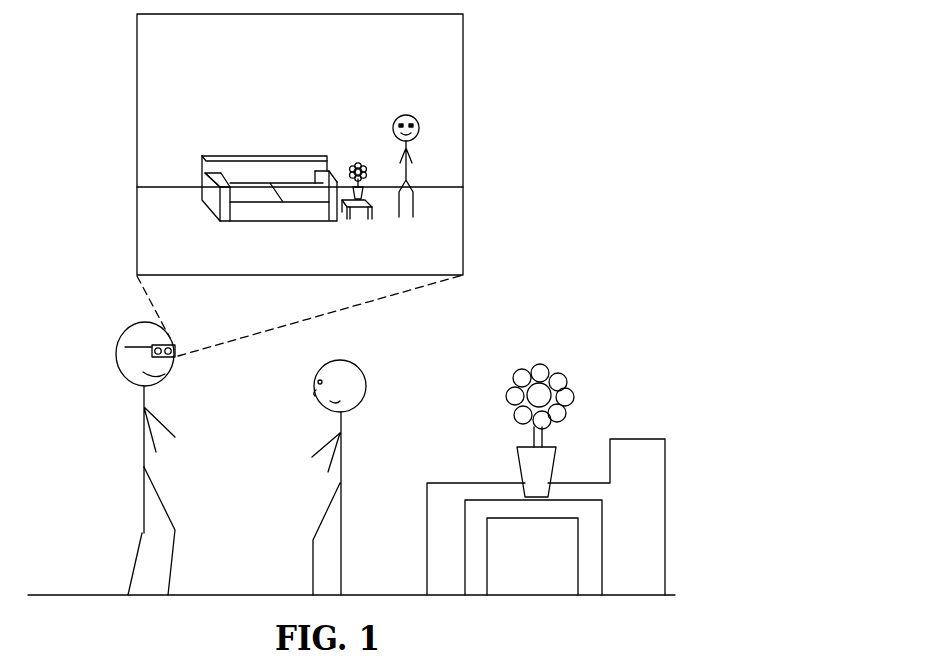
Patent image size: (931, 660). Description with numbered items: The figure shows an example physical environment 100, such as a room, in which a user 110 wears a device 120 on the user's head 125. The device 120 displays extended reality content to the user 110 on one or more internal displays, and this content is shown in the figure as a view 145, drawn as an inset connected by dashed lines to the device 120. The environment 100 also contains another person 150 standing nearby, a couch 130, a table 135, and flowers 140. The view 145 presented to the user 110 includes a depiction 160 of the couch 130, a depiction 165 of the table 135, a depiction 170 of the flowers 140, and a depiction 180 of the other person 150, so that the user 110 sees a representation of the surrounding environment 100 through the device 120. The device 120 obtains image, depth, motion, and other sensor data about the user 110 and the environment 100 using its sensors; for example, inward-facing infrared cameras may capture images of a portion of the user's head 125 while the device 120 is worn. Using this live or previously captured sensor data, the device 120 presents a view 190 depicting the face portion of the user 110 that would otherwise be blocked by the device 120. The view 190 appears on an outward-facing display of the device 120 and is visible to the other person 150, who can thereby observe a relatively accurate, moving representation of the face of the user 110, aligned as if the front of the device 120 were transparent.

The physical environment 100 is at (60, 300).
The user 110 is at (158, 495).
The device 120 is at (173, 343).
The user's head 125 is at (117, 363).
The couch 130 is at (427, 497).
The table 135 is at (587, 590).
The flowers 140 is at (572, 400).
The view 145 is at (193, 40).
The other person 150 is at (362, 372).
The depiction of the couch 160 is at (202, 160).
The depiction of the table 165 is at (365, 221).
The depiction of the flowers 170 is at (356, 168).
The depiction of the other person 180 is at (415, 121).
The view depicting a face portion of the user 190 is at (175, 358).